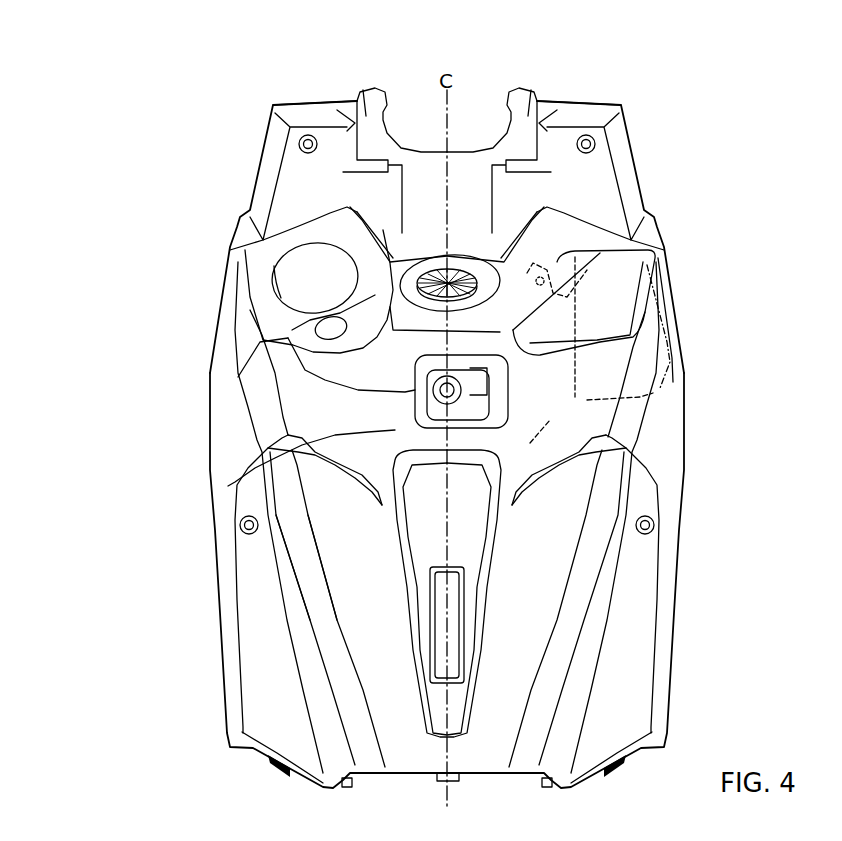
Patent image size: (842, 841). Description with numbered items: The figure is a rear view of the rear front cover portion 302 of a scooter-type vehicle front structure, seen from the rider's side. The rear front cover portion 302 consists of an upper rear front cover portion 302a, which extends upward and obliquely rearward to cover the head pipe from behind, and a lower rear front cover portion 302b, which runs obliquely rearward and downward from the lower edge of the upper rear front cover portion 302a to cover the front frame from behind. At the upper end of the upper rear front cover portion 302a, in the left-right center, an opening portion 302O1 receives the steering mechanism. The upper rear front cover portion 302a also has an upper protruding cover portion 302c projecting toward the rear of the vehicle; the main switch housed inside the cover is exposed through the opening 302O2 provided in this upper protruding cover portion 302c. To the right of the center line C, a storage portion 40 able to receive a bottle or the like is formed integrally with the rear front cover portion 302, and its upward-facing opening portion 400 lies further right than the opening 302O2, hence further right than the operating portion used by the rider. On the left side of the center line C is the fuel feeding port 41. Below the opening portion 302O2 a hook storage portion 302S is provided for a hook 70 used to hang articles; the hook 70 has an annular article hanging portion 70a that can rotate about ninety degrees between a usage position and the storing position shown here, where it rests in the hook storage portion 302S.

The rear front cover portion 302 is at (720, 486).
The upper rear front cover portion 302a is at (182, 364).
The lower rear front cover portion 302b is at (345, 587).
The upper protruding cover portion 302c is at (305, 403).
The hook storage portion 302S is at (243, 475).
The opening portion 302O1 is at (423, 120).
The opening 302O2 is at (457, 258).
The storage portion 40 is at (640, 380).
The opening portion 400 is at (600, 310).
The fuel feeding port 41 is at (305, 293).
The hook 70 is at (483, 405).
The article hanging portion 70a is at (288, 338).